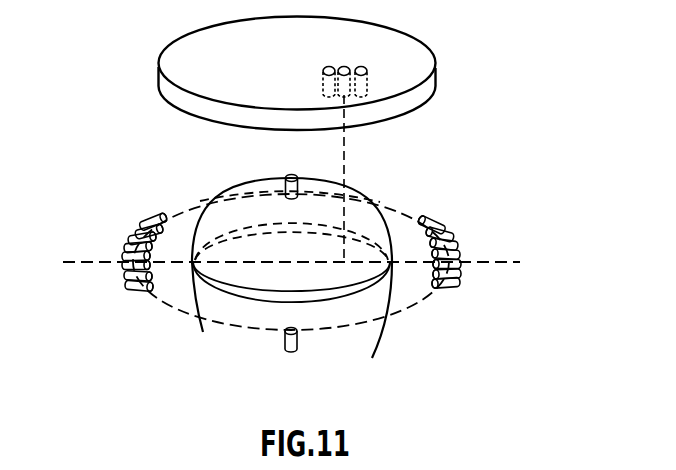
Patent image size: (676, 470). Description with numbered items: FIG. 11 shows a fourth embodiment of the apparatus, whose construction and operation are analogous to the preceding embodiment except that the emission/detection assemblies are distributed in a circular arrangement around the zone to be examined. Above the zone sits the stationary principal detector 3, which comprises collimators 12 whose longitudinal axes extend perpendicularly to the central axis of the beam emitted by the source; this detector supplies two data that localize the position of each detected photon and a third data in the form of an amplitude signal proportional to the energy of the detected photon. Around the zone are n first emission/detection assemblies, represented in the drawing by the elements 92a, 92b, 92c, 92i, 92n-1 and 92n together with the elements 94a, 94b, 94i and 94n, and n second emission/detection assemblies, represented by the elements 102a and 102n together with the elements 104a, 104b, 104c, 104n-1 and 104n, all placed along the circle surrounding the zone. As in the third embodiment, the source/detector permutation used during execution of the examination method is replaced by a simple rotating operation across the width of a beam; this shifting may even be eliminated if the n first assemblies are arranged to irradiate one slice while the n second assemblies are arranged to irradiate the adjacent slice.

The stationary principal detector 3 is at (185, 45).
The collimators 12 is at (346, 66).
The first emission/detection assembly 92i is at (288, 178).
The first emission/detection assembly 94i is at (285, 338).
The second emission/detection assembly 104c is at (144, 214).
The first emission/detection assembly 92c is at (140, 223).
The second emission/detection assembly 104b is at (133, 233).
The first emission/detection assembly 92b is at (129, 243).
The second emission/detection assembly 104a is at (126, 253).
The first emission/detection assembly 92a is at (126, 263).
The second emission/detection assembly 102n is at (127, 274).
The first emission/detection assembly 94n is at (136, 288).
The first emission/detection assembly 92n-1 is at (448, 227).
The second emission/detection assembly 104n-1 is at (453, 238).
The first emission/detection assembly 92n is at (456, 247).
The second emission/detection assembly 104n is at (457, 256).
The first emission/detection assembly 94a is at (457, 265).
The second emission/detection assembly 102a is at (457, 274).
The first emission/detection assembly 94b is at (457, 284).